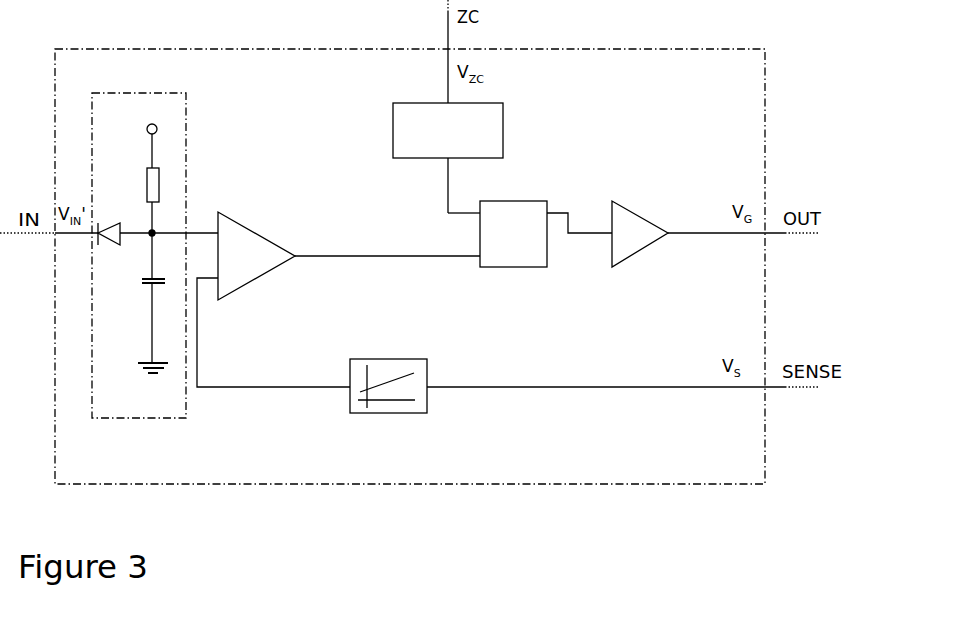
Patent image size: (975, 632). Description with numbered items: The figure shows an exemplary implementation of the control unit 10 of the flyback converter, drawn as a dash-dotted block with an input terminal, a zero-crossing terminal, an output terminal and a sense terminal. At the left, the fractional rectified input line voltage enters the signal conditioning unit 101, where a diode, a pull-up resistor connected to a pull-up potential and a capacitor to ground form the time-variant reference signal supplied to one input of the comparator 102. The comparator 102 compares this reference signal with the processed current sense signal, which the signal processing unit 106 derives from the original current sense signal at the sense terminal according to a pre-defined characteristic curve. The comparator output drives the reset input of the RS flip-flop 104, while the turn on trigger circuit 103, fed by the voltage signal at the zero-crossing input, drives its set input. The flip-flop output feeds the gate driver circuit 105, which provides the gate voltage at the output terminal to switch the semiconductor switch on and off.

The control unit 10 is at (415, 283).
The signal conditioning unit 101 is at (178, 267).
The comparator 102 is at (338, 295).
The turn on trigger circuit 103 is at (448, 158).
The flip-flop 104 is at (546, 245).
The gate driver circuit 105 is at (682, 239).
The signal processing unit 106 is at (436, 400).